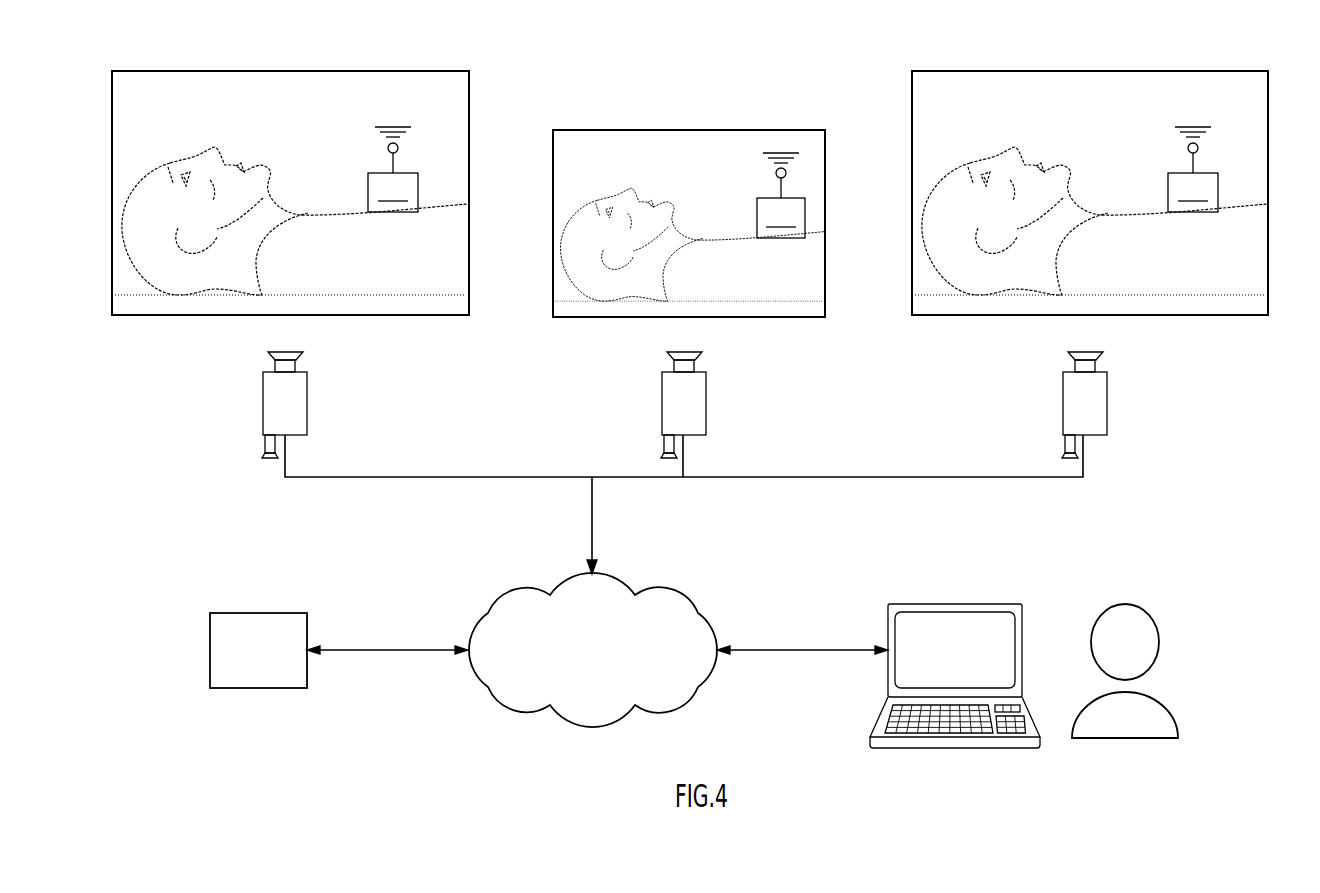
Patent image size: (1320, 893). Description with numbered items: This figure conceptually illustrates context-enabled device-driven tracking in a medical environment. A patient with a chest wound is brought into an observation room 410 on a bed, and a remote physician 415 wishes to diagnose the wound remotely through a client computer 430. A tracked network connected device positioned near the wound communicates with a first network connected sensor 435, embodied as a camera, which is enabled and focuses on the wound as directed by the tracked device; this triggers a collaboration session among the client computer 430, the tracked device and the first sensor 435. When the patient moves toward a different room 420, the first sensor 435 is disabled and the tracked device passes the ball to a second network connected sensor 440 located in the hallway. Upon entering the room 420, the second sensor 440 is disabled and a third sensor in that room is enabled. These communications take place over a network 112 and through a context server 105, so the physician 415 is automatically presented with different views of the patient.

The context server 105 is at (258, 613).
The network 112 is at (690, 593).
The observation room 410 is at (437, 71).
The remote physician 415 is at (1160, 642).
The room 420 is at (1208, 70).
The client computer 430 is at (966, 603).
The first network connected sensor 435 is at (263, 403).
The second network connected sensor 440 is at (662, 403).